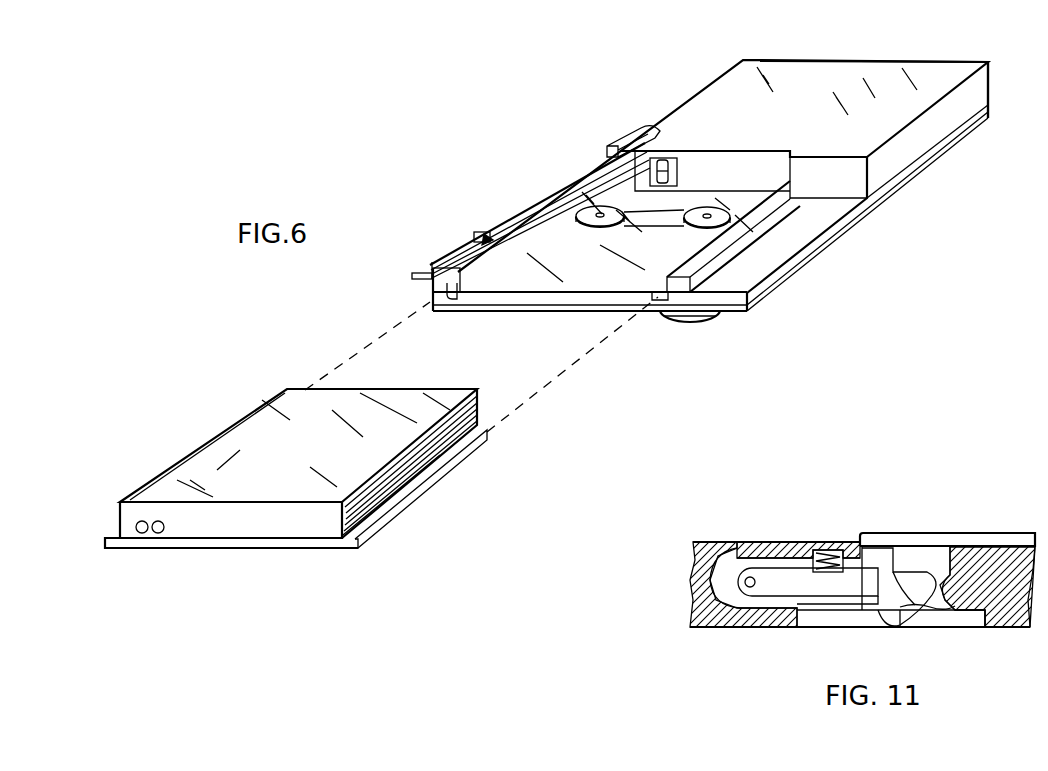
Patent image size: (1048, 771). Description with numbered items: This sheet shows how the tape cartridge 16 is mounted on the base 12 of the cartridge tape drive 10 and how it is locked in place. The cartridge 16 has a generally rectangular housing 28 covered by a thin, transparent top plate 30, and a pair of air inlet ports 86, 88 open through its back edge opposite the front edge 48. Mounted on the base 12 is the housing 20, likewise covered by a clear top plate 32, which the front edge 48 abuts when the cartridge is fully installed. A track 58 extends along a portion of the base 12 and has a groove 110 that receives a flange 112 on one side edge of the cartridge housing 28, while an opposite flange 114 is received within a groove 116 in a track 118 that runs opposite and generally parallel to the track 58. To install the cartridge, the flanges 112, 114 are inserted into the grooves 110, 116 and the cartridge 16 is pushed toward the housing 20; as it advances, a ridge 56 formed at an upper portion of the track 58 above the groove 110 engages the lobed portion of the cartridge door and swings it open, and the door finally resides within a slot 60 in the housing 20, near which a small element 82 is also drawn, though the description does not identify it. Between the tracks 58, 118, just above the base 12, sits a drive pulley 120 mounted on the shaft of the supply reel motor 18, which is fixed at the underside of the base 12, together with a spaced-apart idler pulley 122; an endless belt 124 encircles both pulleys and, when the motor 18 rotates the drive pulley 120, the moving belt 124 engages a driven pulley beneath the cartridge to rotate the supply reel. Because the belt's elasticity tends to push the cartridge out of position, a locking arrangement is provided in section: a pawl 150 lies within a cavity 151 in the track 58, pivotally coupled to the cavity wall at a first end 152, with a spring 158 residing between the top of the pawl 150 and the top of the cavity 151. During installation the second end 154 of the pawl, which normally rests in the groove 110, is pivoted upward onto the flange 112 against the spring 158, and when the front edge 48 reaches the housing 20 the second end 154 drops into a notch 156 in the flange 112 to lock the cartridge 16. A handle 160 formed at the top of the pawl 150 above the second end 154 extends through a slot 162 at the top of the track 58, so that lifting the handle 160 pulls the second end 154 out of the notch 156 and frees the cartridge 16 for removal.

In FIG. 6, the cartridge tape drive 10 is at (838, 262).
In FIG. 6, the base 12 is at (858, 214).
In FIG. 6, the tape cartridge 16 is at (410, 475).
In FIG. 6, the supply reel motor 18 is at (700, 320).
In FIG. 6, the housing 20 is at (984, 91).
In FIG. 6, the rectangular housing 28 is at (468, 436).
In FIG. 6, the top plate 30 is at (253, 428).
In FIG. 6, the top plate 32 is at (924, 66).
In FIG. 6, the front edge 48 is at (295, 385).
In FIG. 6, the ridge 56 is at (548, 210).
In FIG. 6, the track 58 is at (510, 230).
In FIG. 11, the track 58 is at (1010, 628).
In FIG. 6, the slot 60 is at (637, 140).
In FIG. 6, the pin 82 is at (668, 165).
In FIG. 6, the air inlet port 86 is at (142, 533).
In FIG. 6, the air inlet port 88 is at (158, 533).
In FIG. 6, the groove 110 is at (432, 295).
In FIG. 11, the groove 110 is at (805, 628).
In FIG. 11, the flange 112 is at (958, 628).
In FIG. 6, the flange 114 is at (368, 541).
In FIG. 6, the groove 116 is at (656, 299).
In FIG. 6, the track 118 is at (727, 247).
In FIG. 6, the drive pulley 120 is at (704, 228).
In FIG. 6, the idler pulley 122 is at (598, 228).
In FIG. 6, the endless belt 124 is at (634, 225).
In FIG. 11, the pawl 150 is at (772, 580).
In FIG. 11, the cavity 151 is at (730, 628).
In FIG. 11, the first end 152 is at (748, 575).
In FIG. 11, the second end 154 is at (913, 628).
In FIG. 11, the notch 156 is at (893, 612).
In FIG. 11, the spring 158 is at (816, 552).
In FIG. 6, the handle 160 is at (428, 265).
In FIG. 11, the handle 160 is at (868, 533).
In FIG. 11, the slot 162 is at (848, 552).